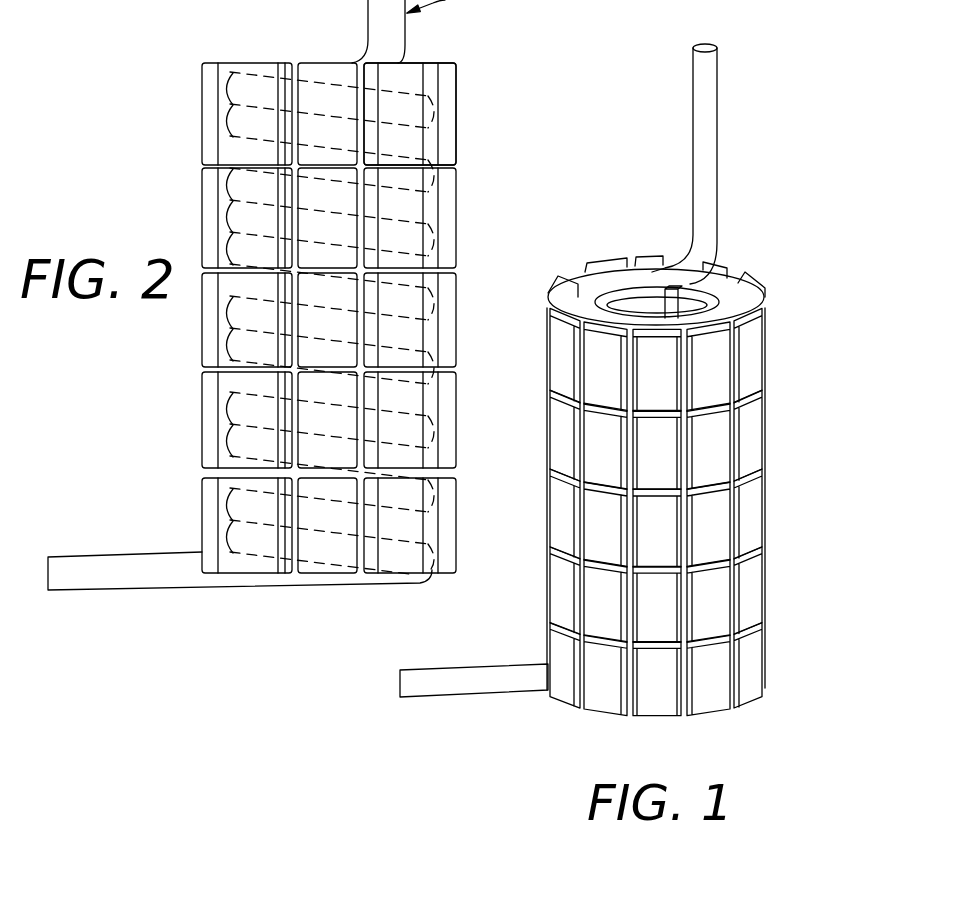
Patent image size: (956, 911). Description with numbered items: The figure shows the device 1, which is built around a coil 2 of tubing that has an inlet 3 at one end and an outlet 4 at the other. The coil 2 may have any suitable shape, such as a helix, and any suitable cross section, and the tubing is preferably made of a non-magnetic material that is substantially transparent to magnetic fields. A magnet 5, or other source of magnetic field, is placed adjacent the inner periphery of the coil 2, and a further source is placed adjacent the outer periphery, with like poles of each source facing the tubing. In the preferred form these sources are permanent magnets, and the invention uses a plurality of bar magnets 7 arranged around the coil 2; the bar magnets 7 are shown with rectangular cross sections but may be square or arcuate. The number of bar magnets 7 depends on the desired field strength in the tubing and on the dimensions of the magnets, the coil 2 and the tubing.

In FIG. 2, the device 1 is at (180, 119).
In FIG. 1, the device 1 is at (787, 405).
In FIG. 1, the coil 2 is at (733, 297).
In FIG. 1, the inlet 3 is at (457, 685).
In FIG. 1, the outlet 4 is at (718, 44).
In FIG. 2, the magnet 5 is at (457, 62).
In FIG. 2, the bar magnets 7 is at (447, 135).